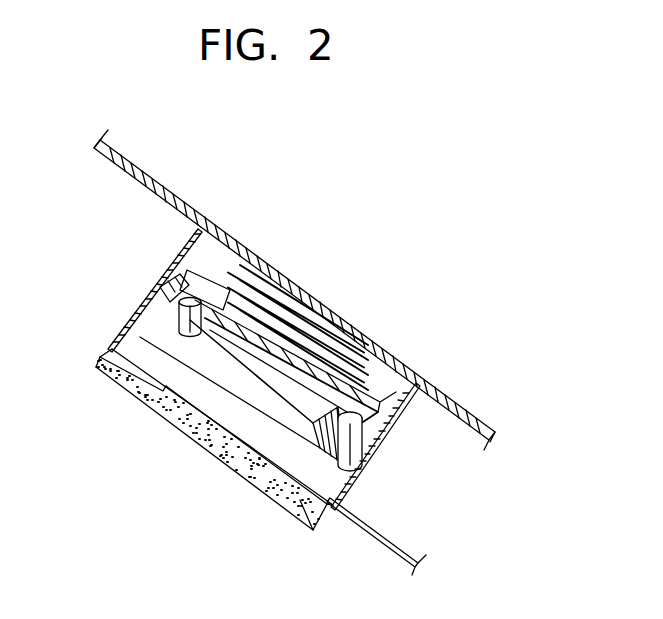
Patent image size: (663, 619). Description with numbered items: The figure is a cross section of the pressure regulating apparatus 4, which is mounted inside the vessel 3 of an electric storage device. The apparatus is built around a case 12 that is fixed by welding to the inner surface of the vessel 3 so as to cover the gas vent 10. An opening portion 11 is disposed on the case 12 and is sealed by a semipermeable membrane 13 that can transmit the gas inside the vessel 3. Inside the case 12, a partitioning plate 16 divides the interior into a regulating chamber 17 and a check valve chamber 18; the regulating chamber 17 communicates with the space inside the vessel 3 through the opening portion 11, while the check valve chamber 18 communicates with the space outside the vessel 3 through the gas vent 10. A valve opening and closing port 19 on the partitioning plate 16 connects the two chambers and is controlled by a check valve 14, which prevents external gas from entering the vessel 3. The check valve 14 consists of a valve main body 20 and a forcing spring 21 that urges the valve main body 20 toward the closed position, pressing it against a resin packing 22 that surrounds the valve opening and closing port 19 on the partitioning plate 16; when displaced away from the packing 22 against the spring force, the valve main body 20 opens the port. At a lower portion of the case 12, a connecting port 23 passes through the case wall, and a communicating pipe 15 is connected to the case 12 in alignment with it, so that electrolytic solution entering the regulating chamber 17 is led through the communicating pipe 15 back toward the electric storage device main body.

The vessel 3 is at (167, 185).
The pressure regulating apparatus 4 is at (324, 545).
The gas vent 10 is at (295, 299).
The opening portion 11 is at (232, 425).
The case 12 is at (390, 432).
The semipermeable membrane 13 is at (228, 450).
The check valve 14 is at (368, 380).
The communicating pipe 15 is at (397, 538).
The partitioning plate 16 is at (340, 443).
The regulating chamber 17 is at (147, 340).
The check valve chamber 18 is at (203, 253).
The valve opening and closing port 19 is at (247, 358).
The valve main body 20 is at (190, 272).
The forcing spring 21 is at (237, 284).
The packing 22 is at (180, 300).
The connecting port 23 is at (292, 493).